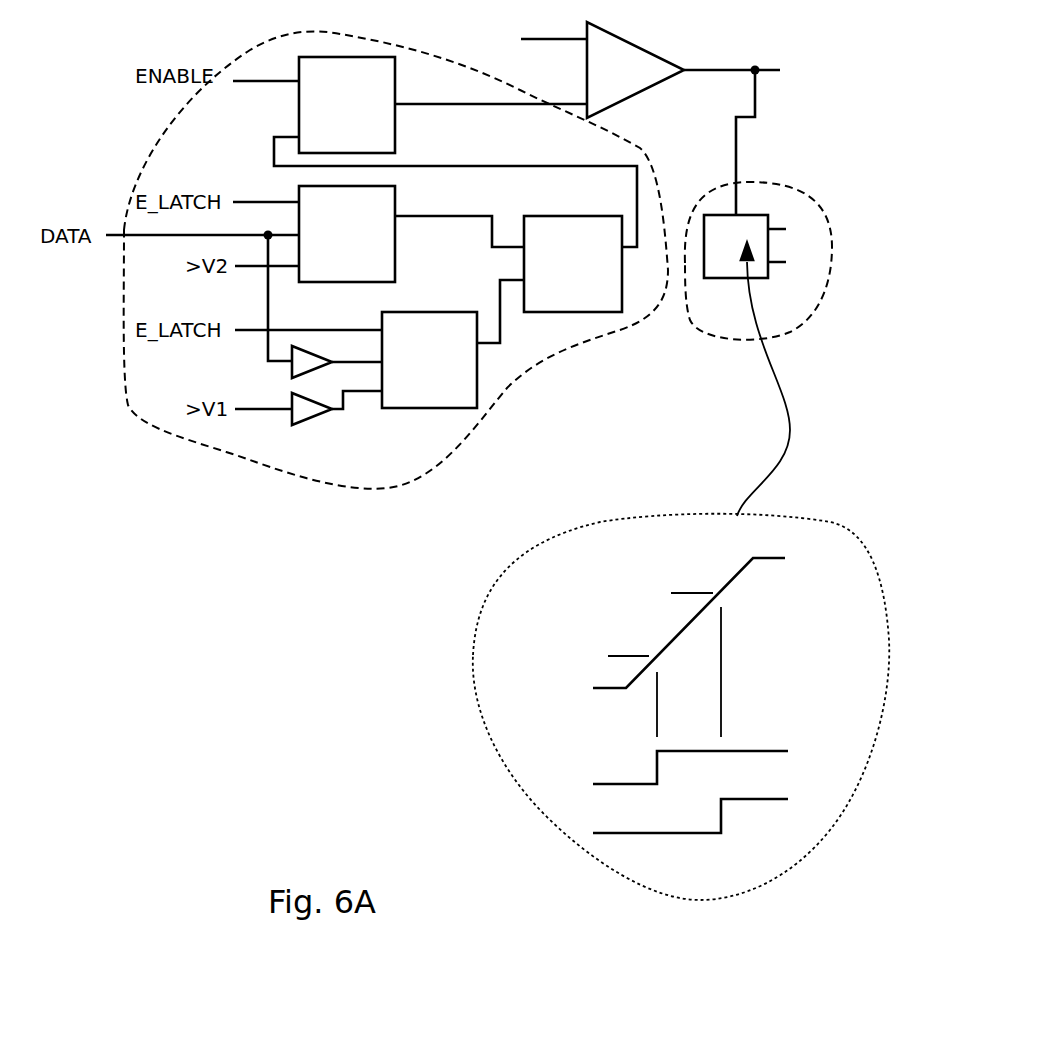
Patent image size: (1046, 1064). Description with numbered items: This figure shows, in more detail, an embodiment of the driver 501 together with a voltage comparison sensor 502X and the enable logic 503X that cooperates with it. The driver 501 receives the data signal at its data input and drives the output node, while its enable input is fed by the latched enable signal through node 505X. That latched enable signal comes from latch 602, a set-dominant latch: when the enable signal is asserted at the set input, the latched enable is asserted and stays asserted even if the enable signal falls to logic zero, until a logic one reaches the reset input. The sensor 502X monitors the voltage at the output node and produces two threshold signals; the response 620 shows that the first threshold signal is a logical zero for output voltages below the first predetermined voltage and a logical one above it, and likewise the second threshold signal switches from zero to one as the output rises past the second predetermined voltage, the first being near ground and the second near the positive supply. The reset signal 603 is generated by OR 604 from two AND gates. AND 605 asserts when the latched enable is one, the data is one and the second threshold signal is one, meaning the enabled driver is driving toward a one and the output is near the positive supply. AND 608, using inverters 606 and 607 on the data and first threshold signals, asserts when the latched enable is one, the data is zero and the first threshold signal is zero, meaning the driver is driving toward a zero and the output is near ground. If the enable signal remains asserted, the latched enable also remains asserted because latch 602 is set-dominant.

The driver 501 is at (618, 34).
The sensor 502X is at (738, 182).
The enable logic 503X is at (507, 388).
The node 505X is at (574, 104).
The latch 602 is at (396, 118).
The signal 603 is at (460, 166).
The OR 604 is at (557, 200).
The AND 605 is at (397, 233).
The inverter 606 is at (320, 350).
The inverter 607 is at (327, 410).
The AND 608 is at (397, 312).
The response 620 is at (473, 655).